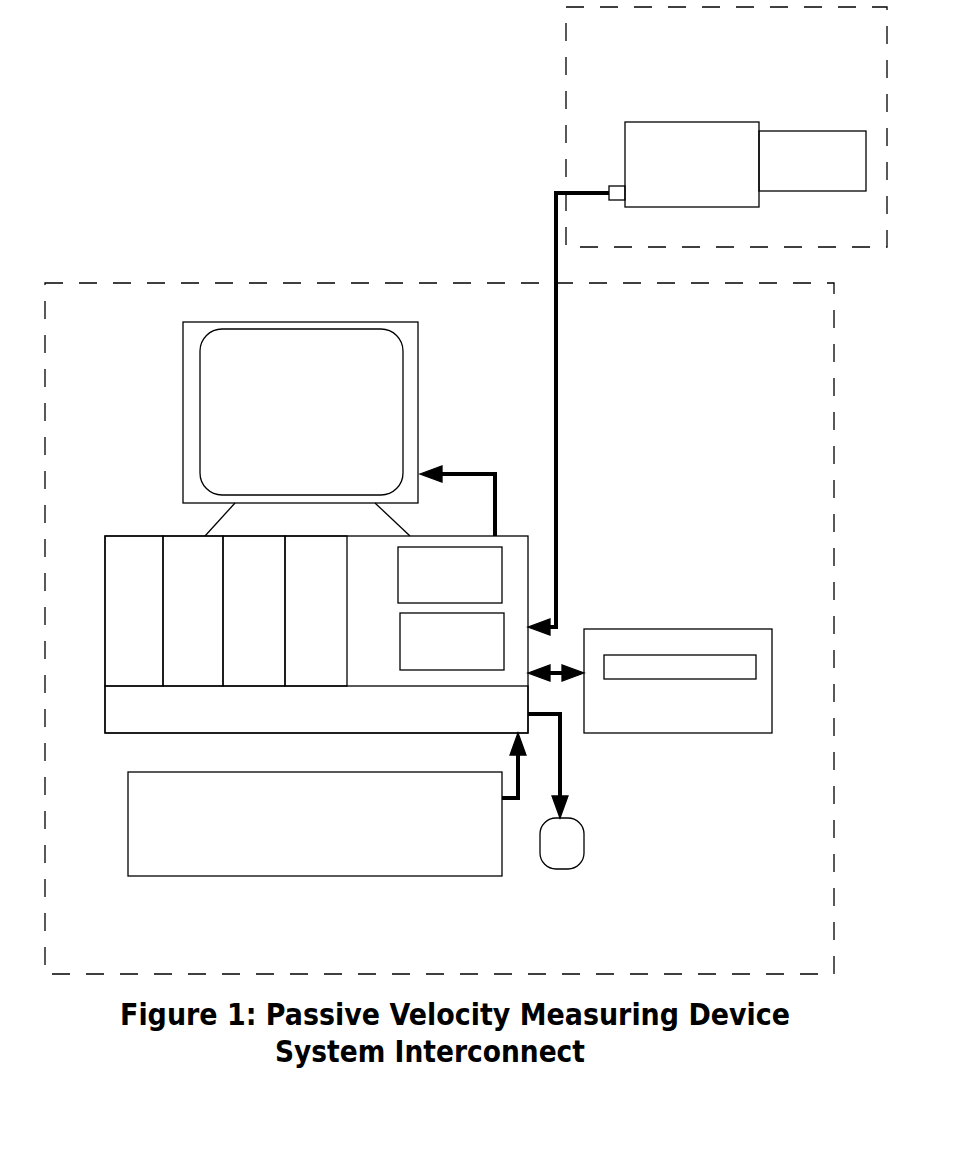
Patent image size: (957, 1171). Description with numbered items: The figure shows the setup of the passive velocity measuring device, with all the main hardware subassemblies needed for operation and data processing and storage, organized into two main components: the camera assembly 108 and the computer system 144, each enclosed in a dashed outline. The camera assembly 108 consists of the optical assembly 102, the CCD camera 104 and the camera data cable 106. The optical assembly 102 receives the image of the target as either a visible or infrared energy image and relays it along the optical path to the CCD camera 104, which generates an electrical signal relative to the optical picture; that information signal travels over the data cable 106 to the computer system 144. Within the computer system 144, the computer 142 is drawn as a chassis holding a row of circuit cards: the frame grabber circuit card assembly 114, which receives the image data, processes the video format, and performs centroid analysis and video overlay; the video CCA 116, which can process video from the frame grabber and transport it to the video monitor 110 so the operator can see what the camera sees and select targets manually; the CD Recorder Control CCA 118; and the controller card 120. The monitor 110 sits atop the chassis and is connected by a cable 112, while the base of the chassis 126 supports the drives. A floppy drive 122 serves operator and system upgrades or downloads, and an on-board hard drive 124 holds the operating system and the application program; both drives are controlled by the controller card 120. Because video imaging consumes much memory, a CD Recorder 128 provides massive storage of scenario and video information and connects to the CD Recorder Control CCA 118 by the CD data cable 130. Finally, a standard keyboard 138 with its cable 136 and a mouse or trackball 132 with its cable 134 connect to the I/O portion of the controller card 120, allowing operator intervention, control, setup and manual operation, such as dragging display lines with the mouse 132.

The optical assembly 102 is at (832, 108).
The CCD camera 104 is at (694, 96).
The camera data cable 106 is at (532, 257).
The camera assembly 108 is at (545, 45).
The video monitor 110 is at (162, 366).
The monitor cable 112 is at (481, 450).
The frame grabber circuit card assembly 114 is at (134, 611).
The video CCA 116 is at (193, 611).
The CD Recorder Control CCA 118 is at (254, 611).
The controller card 120 is at (316, 611).
The floppy drive 122 is at (450, 575).
The hard drive 124 is at (452, 641).
The computer base section 126 is at (316, 709).
The CD Recorder 128 is at (743, 607).
The CD data cable 130 is at (564, 643).
The mouse or trackball 132 is at (612, 845).
The mouse cable 134 is at (589, 761).
The keyboard cable 136 is at (516, 825).
The keyboard 138 is at (403, 893).
The computer 142 is at (94, 513).
The computer system 144 is at (84, 266).